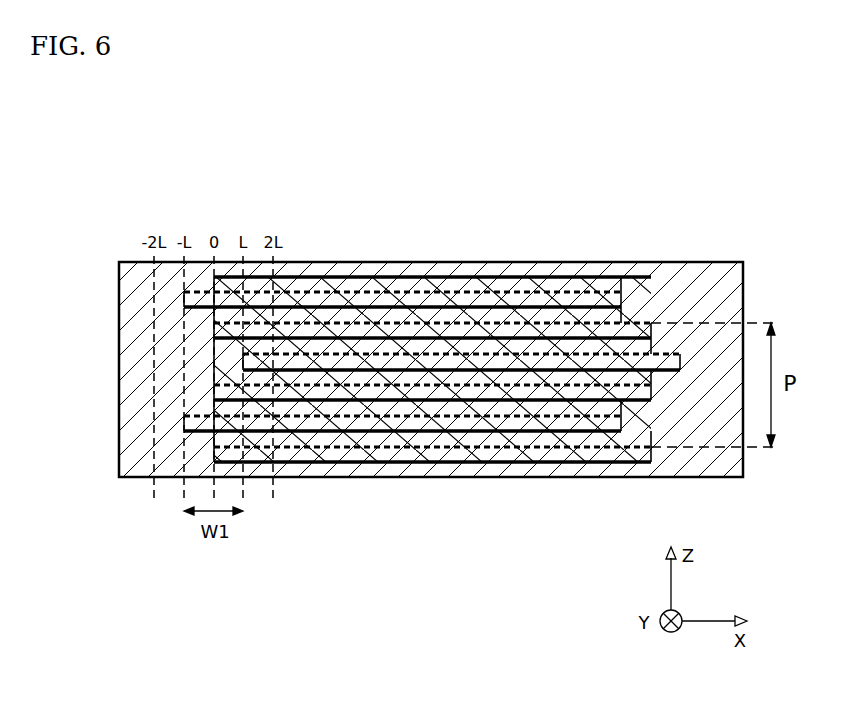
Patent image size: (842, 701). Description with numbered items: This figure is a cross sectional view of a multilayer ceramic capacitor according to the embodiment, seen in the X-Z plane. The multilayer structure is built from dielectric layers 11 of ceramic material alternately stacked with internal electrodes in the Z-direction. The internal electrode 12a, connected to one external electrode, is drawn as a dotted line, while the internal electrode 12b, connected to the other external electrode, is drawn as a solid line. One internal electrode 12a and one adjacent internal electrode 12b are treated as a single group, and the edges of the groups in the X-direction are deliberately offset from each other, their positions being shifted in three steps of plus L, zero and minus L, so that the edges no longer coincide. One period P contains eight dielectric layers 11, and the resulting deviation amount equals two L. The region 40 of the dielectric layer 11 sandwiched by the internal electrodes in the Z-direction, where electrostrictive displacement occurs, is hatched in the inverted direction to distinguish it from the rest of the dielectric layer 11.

The dielectric layer 11 is at (708, 275).
The internal electrode 12a is at (372, 289).
The internal electrode 12b is at (322, 276).
The region 40 is at (485, 287).